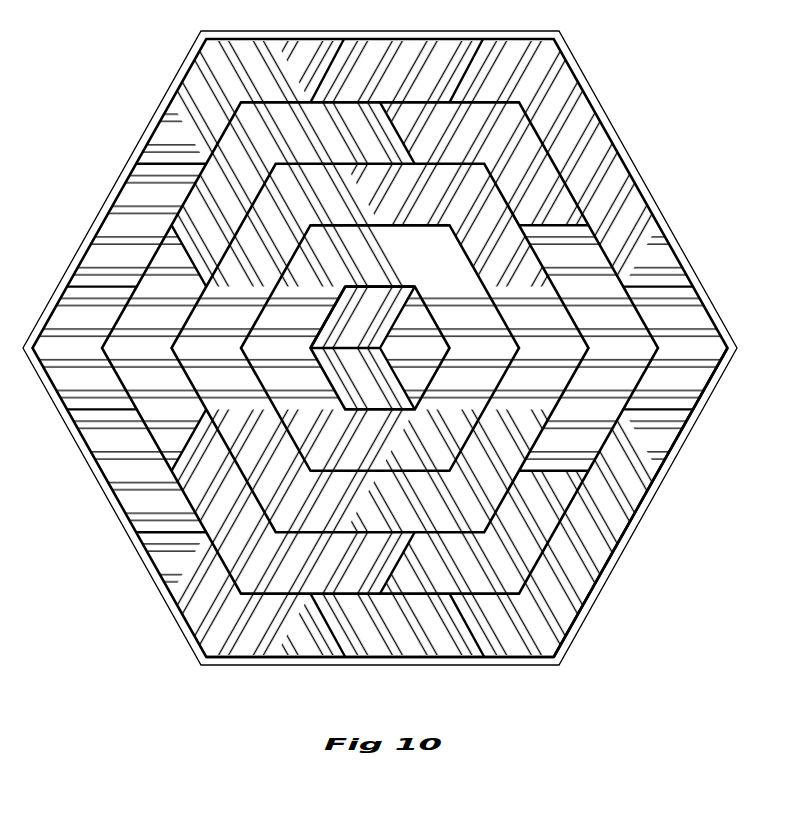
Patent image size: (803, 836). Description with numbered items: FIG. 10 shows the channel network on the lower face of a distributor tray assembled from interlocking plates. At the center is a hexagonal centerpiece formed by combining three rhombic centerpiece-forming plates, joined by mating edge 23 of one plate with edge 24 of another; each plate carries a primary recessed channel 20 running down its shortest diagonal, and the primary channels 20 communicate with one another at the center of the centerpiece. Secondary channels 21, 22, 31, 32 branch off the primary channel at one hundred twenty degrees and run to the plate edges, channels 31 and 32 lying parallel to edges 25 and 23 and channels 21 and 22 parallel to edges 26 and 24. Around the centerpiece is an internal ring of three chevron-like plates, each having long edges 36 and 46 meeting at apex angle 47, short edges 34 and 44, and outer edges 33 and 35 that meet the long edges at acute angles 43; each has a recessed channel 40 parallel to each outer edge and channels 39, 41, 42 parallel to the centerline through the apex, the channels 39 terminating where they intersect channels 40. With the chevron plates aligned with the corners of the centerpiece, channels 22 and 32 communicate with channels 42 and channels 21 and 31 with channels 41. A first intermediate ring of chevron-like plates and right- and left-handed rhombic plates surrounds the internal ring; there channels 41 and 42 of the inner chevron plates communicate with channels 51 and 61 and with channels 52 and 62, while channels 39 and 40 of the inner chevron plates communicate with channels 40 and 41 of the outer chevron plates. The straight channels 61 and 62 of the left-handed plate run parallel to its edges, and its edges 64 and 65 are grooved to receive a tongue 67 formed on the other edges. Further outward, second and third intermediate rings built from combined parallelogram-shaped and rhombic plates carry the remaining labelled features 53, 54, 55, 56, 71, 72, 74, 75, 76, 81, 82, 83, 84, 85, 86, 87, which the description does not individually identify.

The primary recessed channel 20 is at (362, 310).
The secondary channel 21 is at (408, 283).
The secondary channel 22 is at (374, 286).
The edge 23 is at (404, 339).
The edge 24 is at (350, 360).
The edge 25 is at (431, 396).
The edge 26 is at (432, 318).
The secondary channel 31 is at (355, 313).
The secondary channel 32 is at (355, 330).
The outer edge 33 is at (455, 372).
The short edge 34 is at (440, 413).
The outer edge 35 is at (495, 350).
The long edge 36 is at (500, 380).
The channel 39 is at (166, 130).
The recessed channel 40 is at (140, 140).
The channel 41 is at (207, 76).
The channel 42 is at (188, 108).
The acute angle 43 is at (381, 564).
The short edge 44 is at (375, 439).
The long edge 46 is at (391, 469).
The apex angle 47 is at (190, 263).
The channel 51 is at (218, 366).
The channel 52 is at (220, 391).
The block 53 is at (495, 416).
The block joint 54 is at (470, 451).
The block joint 55 is at (467, 471).
The block joint 56 is at (470, 493).
The straight recessed channel 61 is at (98, 333).
The straight recessed channel 62 is at (75, 307).
The edge 64 is at (476, 601).
The edge 65 is at (479, 641).
The tongue 67 is at (525, 663).
The block 71 is at (248, 158).
The block 72 is at (220, 177).
The hexagonal ring 74 is at (315, 540).
The block 75 is at (262, 589).
The hexagonal ring 76 is at (340, 592).
The block 81 is at (110, 178).
The block joint 82 is at (95, 206).
The block joint 83 is at (450, 619).
The ring edge 84 is at (385, 626).
The hexagonal ring 85 is at (335, 628).
The hexagonal ring 86 is at (390, 647).
The bottom edge 87 is at (420, 663).